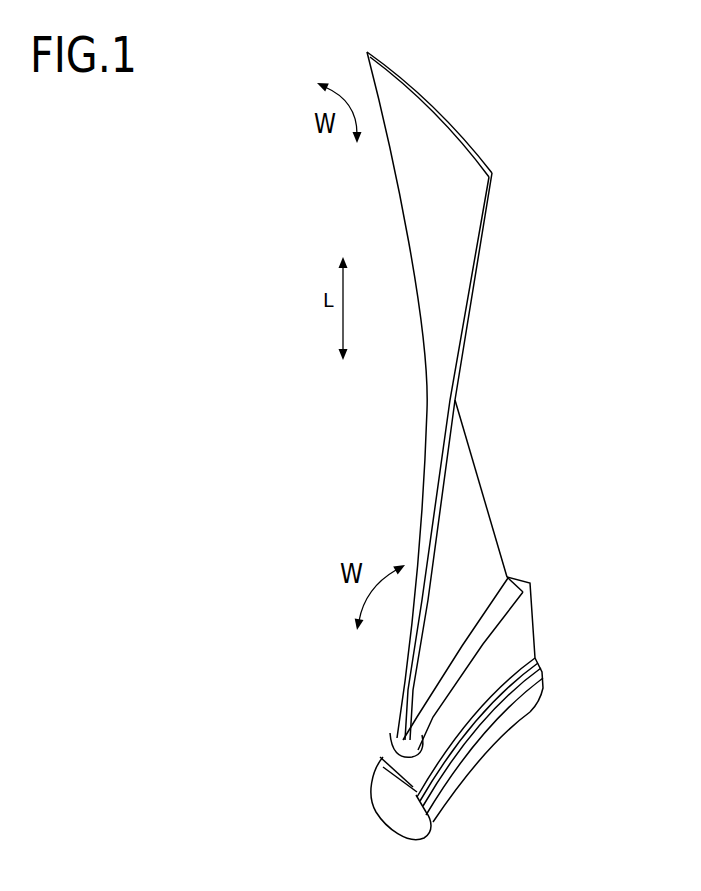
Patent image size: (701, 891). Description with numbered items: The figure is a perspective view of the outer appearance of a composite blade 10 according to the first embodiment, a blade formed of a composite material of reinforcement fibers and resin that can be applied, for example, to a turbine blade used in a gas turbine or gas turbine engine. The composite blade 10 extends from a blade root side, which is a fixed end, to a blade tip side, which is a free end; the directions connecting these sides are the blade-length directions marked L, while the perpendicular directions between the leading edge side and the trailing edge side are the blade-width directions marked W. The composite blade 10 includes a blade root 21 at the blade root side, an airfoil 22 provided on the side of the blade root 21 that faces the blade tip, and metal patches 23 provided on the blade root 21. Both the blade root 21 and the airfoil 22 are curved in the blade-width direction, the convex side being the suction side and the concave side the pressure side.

The composite blade 10 is at (585, 139).
The airfoil 22 is at (460, 127).
The blade root 21 is at (390, 777).
The metal patches 23 is at (542, 670).